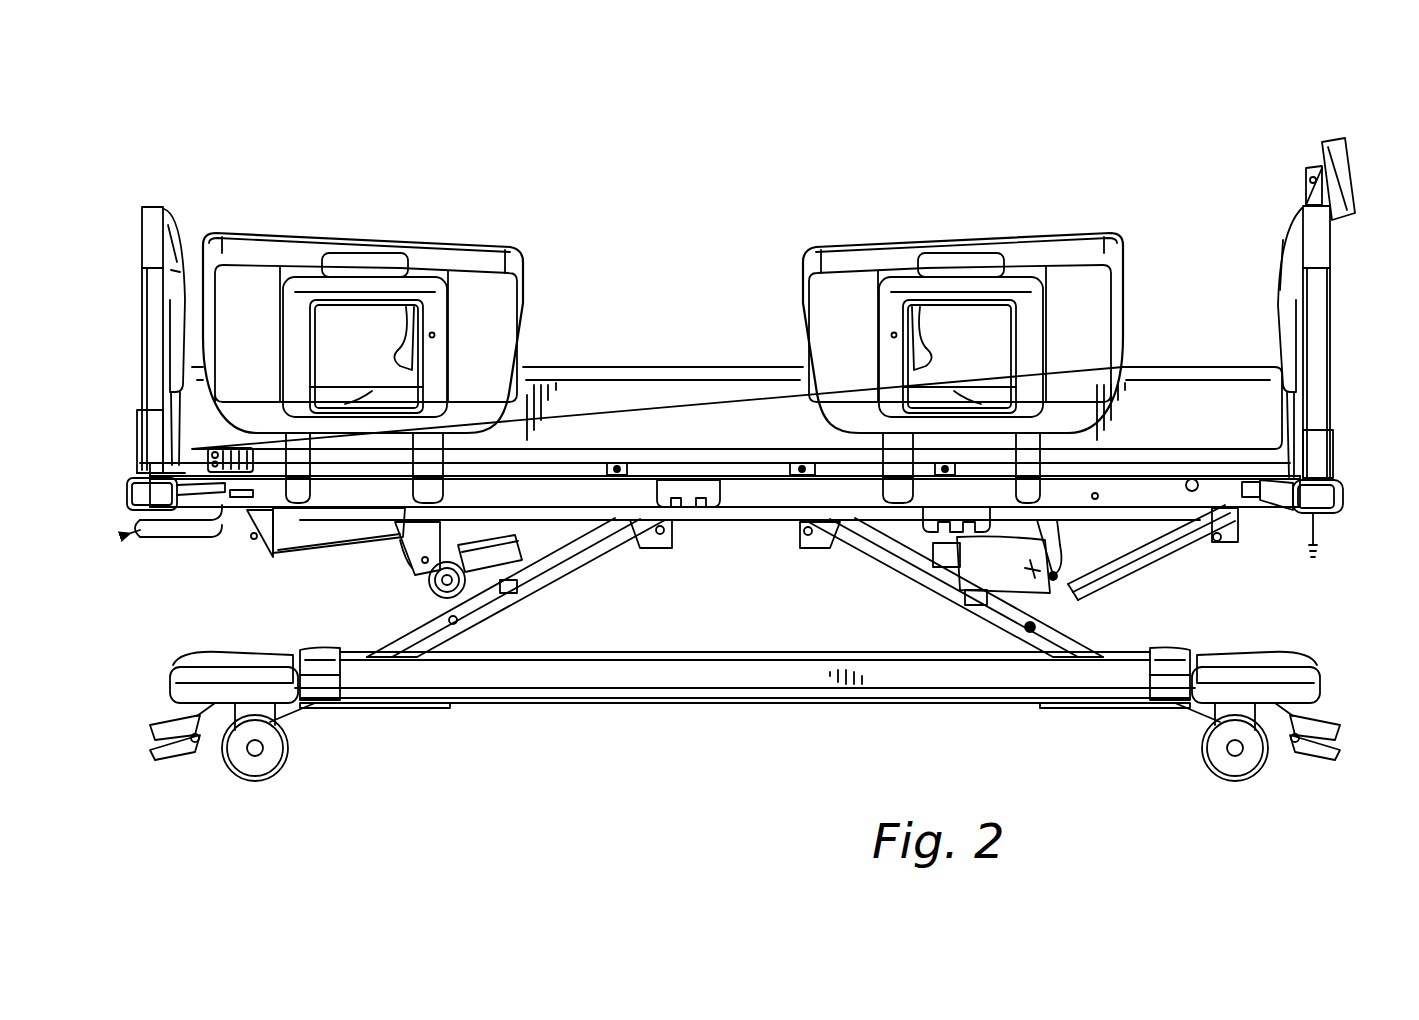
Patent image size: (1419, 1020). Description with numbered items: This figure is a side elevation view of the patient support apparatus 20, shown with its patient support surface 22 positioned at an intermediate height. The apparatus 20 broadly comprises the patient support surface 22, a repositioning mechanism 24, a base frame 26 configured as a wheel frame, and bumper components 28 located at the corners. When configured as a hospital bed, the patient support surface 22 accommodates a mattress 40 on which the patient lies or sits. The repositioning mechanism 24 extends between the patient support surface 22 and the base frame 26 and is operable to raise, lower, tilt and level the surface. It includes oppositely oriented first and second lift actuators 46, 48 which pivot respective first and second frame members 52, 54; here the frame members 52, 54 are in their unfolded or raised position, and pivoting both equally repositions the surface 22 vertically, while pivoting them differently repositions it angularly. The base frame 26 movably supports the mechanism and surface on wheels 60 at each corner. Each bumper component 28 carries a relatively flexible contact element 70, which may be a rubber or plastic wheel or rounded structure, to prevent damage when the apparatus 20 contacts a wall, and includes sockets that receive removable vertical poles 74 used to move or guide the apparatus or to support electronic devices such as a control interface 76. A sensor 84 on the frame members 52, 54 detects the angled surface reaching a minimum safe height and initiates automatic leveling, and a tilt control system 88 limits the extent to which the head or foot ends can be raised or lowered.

The patient support apparatus 20 is at (657, 806).
The patient support surface 22 is at (1273, 472).
The repositioning mechanism 24 is at (846, 568).
The base frame 26 is at (746, 710).
The bumper component 28 is at (1358, 488).
The mattress 40 is at (718, 398).
The first lift actuator 46 is at (437, 585).
The second lift actuator 48 is at (1088, 590).
The first frame member 52 is at (540, 577).
The second frame member 54 is at (920, 575).
The wheel 60 is at (1201, 770).
The flexible contact element 70 is at (1292, 520).
The vertical pole 74 is at (146, 248).
The control interface 76 is at (1335, 140).
The sensor 84 is at (966, 608).
The tilt control system 88 is at (218, 478).